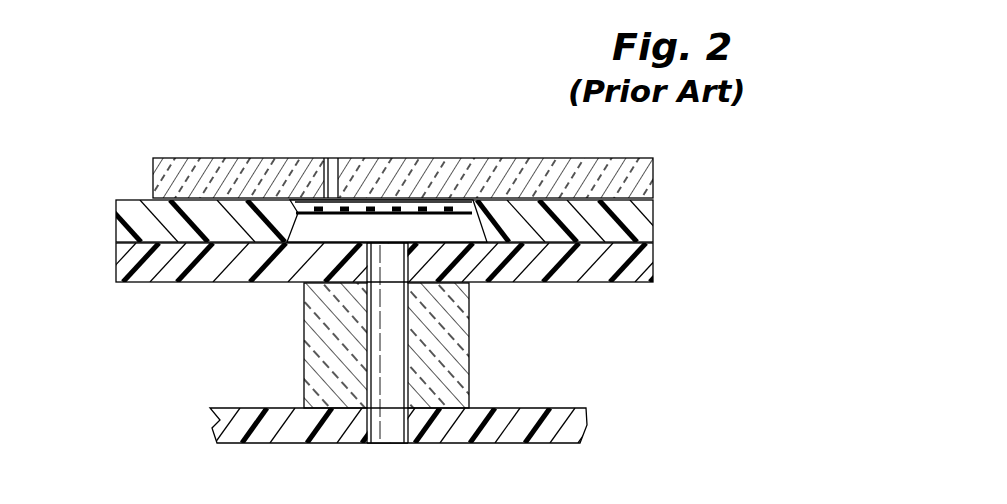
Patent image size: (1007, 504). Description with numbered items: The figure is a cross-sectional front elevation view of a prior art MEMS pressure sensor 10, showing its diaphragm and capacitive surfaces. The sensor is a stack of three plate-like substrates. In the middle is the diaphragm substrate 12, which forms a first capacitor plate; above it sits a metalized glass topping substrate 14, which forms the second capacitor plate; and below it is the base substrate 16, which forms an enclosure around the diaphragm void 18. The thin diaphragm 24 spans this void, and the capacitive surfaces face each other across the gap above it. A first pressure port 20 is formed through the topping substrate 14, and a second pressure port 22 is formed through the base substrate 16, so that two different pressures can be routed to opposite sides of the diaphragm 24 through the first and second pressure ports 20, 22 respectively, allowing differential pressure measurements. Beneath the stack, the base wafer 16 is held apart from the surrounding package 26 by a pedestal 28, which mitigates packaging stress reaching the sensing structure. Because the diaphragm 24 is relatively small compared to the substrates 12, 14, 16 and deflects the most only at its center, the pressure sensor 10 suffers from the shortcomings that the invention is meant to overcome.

The MEMS pressure sensor 10 is at (119, 111).
The diaphragm substrate 12 is at (653, 218).
The metalized glass topping substrate 14 is at (655, 177).
The base substrate 16 is at (653, 256).
The diaphragm void 18 is at (445, 230).
The first pressure port 20 is at (330, 158).
The second pressure port 22 is at (390, 258).
The diaphragm 24 is at (403, 208).
The package 26 is at (567, 408).
The pedestal 28 is at (471, 337).